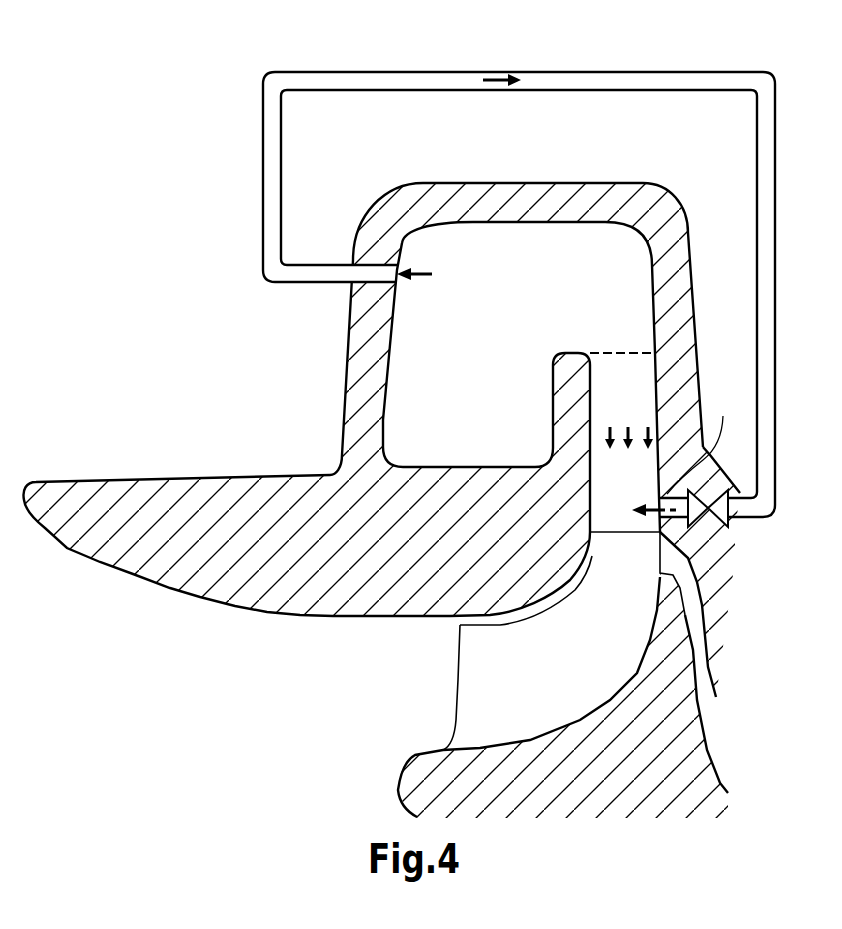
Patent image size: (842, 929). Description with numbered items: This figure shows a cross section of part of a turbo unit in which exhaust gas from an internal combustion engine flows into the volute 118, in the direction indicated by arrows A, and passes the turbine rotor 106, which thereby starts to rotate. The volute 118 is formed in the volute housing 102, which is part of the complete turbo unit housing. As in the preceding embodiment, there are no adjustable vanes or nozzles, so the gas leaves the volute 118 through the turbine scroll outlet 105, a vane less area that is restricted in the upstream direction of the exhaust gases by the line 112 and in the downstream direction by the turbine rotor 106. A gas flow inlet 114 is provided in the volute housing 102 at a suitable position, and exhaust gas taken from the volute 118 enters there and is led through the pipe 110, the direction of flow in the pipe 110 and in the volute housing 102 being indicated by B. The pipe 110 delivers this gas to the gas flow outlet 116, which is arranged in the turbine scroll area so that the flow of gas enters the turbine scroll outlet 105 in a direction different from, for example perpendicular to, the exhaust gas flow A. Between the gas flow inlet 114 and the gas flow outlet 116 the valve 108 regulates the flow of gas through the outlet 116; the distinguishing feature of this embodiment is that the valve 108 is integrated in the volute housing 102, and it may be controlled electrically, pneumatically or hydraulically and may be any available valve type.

The volute housing 102 is at (665, 300).
The turbine scroll outlet 105 is at (623, 430).
The turbine rotor 106 is at (623, 583).
The valve 108 is at (727, 527).
The pipe 110 is at (432, 72).
The line 112 is at (620, 352).
The gas flow inlet 114 is at (397, 276).
The gas flow outlet 116 is at (660, 500).
The volute 118 is at (506, 296).